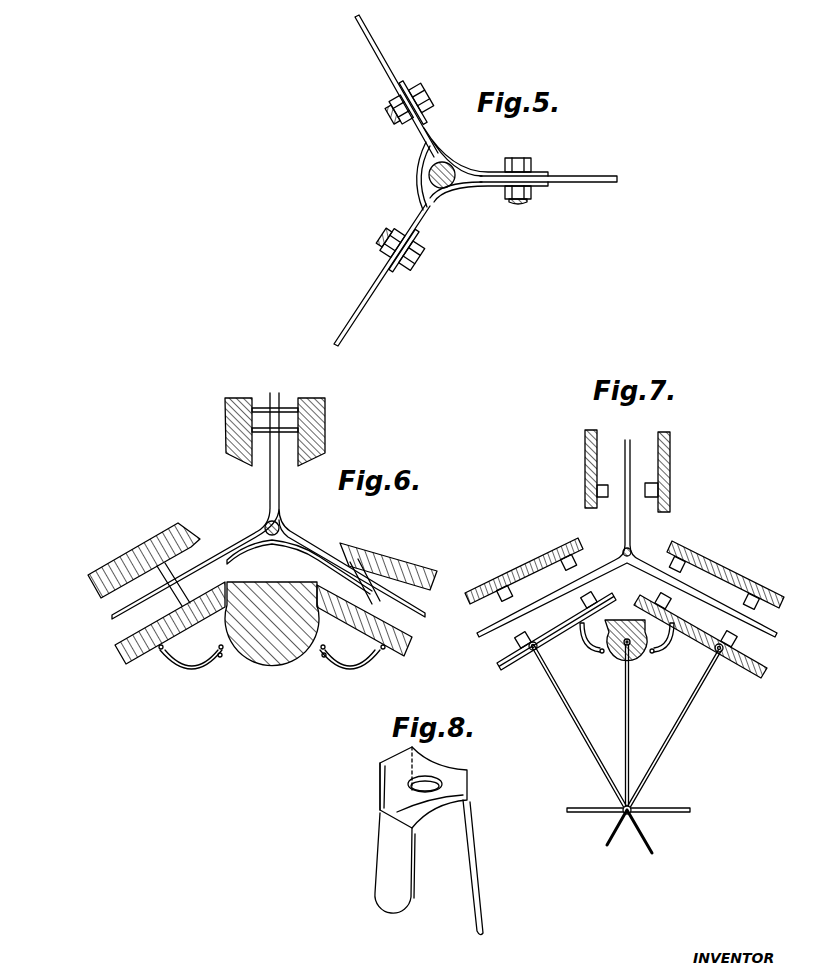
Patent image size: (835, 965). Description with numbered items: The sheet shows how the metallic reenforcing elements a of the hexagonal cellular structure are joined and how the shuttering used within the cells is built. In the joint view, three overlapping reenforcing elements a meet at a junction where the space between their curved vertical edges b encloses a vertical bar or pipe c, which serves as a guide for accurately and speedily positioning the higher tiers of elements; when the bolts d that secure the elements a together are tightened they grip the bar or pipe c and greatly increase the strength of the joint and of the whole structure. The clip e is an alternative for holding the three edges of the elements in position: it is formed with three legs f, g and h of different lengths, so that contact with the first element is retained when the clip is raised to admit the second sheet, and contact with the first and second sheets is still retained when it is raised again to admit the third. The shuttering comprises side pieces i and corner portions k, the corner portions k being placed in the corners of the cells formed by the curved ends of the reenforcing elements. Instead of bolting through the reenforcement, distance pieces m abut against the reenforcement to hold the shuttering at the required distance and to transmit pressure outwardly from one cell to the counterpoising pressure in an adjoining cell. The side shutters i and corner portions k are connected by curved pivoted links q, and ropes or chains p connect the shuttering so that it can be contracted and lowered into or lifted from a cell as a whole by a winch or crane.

In FIG. 5, the metallic reenforcing element a is at (387, 64).
In FIG. 7, the metallic reenforcing element a is at (629, 447).
In FIG. 5, the curved vertical edge b is at (461, 162).
In FIG. 5, the vertical bar or pipe c is at (443, 161).
In FIG. 5, the bolt d is at (508, 158).
In FIG. 6, the side piece of shuttering i is at (242, 449).
In FIG. 7, the side piece of shuttering i is at (540, 558).
In FIG. 6, the distance piece m is at (187, 598).
In FIG. 7, the distance piece m is at (570, 560).
In FIG. 6, the corner portion of shuttering k is at (275, 632).
In FIG. 7, the corner portion of shuttering k is at (618, 652).
In FIG. 6, the curved pivoted link q is at (200, 668).
In FIG. 7, the curved pivoted link q is at (583, 650).
In FIG. 7, the rope or chain p is at (700, 693).
In FIG. 7, the clip leg h is at (695, 633).
In FIG. 8, the clip leg h is at (380, 789).
In FIG. 8, the clip e is at (453, 785).
In FIG. 8, the clip leg f is at (473, 838).
In FIG. 8, the clip leg g is at (413, 889).